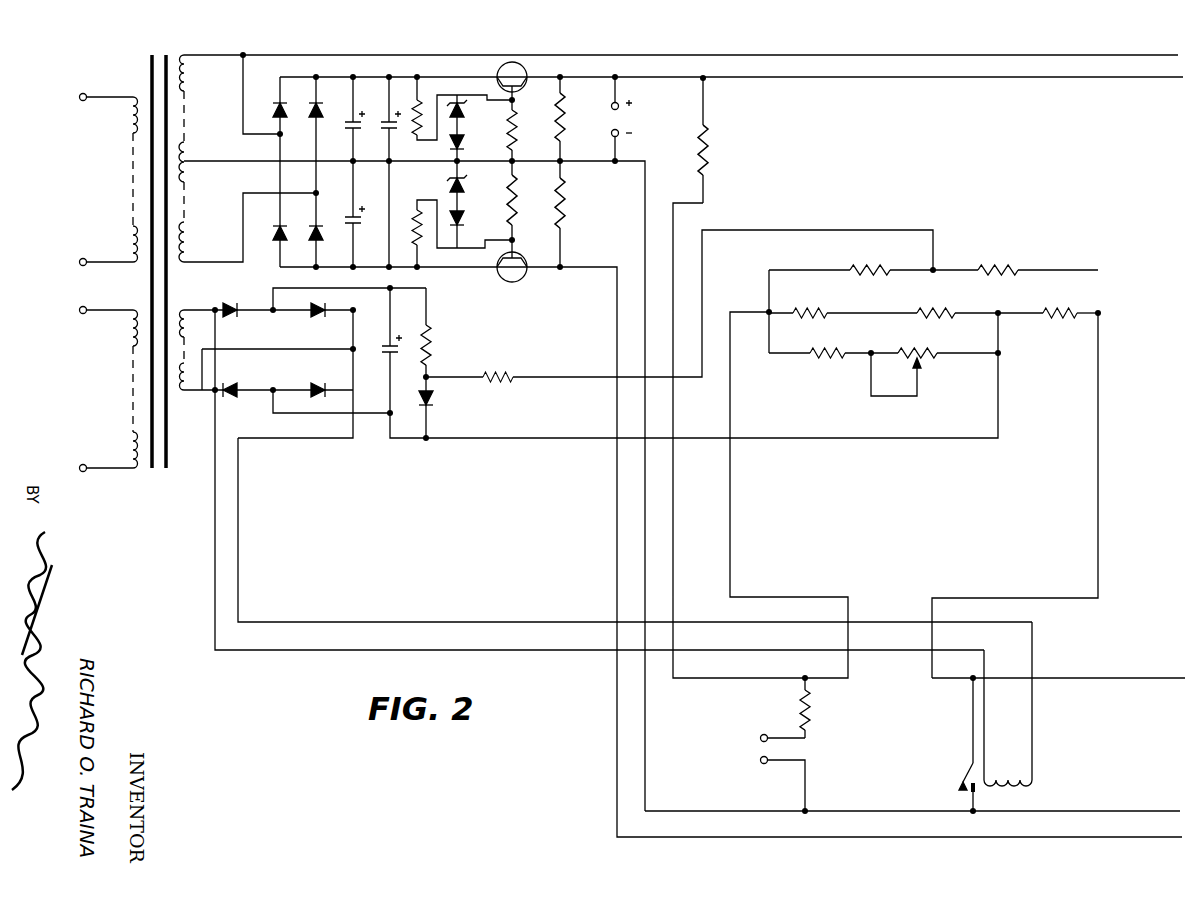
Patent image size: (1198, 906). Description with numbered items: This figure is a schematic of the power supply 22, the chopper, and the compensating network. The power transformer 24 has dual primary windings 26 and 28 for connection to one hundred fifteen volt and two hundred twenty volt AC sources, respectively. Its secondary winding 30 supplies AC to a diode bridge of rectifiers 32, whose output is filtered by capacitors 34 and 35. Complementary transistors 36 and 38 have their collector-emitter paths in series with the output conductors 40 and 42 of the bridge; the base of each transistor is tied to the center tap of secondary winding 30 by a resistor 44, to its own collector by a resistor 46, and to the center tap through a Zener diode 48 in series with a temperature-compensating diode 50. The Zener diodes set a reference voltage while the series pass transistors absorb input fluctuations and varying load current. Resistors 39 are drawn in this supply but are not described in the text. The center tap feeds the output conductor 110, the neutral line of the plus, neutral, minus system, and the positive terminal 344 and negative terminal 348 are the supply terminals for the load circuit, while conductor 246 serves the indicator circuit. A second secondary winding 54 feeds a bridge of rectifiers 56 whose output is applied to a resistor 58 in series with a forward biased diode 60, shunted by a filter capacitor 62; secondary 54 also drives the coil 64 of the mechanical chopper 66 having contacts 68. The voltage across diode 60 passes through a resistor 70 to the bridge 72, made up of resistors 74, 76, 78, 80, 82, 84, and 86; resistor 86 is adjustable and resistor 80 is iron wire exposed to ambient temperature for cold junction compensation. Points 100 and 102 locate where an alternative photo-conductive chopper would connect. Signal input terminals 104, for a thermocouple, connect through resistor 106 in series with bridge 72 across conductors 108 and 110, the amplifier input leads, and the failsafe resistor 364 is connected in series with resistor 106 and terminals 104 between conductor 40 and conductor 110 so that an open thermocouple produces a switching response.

The power supply 22 is at (524, 329).
The power transformer 24 is at (150, 86).
The primary winding 26 is at (131, 129).
The primary winding 28 is at (131, 331).
The secondary winding 30 is at (184, 88).
The rectifiers 32 is at (318, 120).
The capacitor 34 is at (357, 128).
The capacitor 35 is at (393, 130).
The transistor 36 is at (522, 63).
The transistor 38 is at (524, 279).
The resistor 39 is at (564, 114).
The output conductor 40 is at (788, 79).
The output conductor 42 is at (590, 267).
The resistor 44 is at (516, 131).
The resistor 46 is at (419, 112).
The Zener diode 48 is at (463, 110).
The temperature-compensating diode 50 is at (463, 141).
The secondary winding 54 is at (196, 350).
The rectifiers 56 is at (312, 318).
The resistor 58 is at (431, 360).
The forward biased diode 60 is at (432, 400).
The filter capacitor 62 is at (395, 353).
The coil 64 is at (1010, 778).
The mechanical chopper 66 is at (1008, 791).
The contacts 68 is at (969, 776).
The resistor 70 is at (509, 380).
The bridge 72 is at (923, 301).
The resistor 74 is at (856, 268).
The resistor 76 is at (1006, 268).
The resistor 78 is at (806, 311).
The resistor 80 is at (941, 316).
The resistor 82 is at (1056, 318).
The resistor 84 is at (823, 358).
The adjustable resistor 86 is at (926, 360).
The connection point 100 is at (970, 680).
The connection point 102 is at (975, 813).
The signal input terminals 104 is at (760, 759).
The resistor 106 is at (801, 712).
The conductor 108 is at (1110, 677).
The output conductor 110 is at (1105, 810).
The conductor 246 is at (705, 55).
The positive terminal 344 is at (627, 107).
The negative terminal 348 is at (627, 135).
The resistor 364 is at (708, 150).